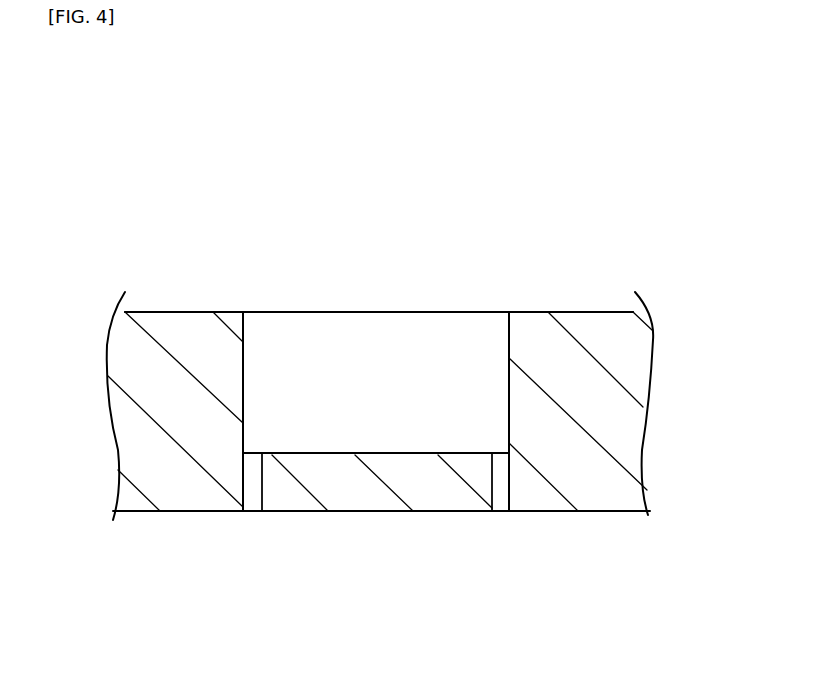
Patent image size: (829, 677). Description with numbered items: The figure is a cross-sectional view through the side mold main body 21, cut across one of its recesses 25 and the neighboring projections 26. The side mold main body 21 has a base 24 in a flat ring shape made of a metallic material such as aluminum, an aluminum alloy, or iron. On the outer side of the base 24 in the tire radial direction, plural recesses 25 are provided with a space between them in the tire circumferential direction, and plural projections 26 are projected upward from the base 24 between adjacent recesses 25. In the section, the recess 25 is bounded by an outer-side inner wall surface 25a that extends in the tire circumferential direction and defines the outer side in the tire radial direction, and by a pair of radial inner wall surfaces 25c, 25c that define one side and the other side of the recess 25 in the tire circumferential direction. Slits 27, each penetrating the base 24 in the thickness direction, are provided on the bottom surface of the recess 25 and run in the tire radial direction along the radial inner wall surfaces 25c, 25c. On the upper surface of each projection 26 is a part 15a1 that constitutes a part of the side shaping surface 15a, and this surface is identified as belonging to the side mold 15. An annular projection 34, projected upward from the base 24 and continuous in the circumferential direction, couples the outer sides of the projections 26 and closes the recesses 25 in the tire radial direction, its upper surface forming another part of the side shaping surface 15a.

The side mold main body 21 is at (395, 135).
The annular projection 34 is at (308, 312).
The part of the side shaping surface 15a1 is at (595, 248).
The side shaping surface 15a is at (188, 312).
The die 15 is at (553, 312).
The projection 26 is at (147, 372).
The outer-side inner wall surface 25a is at (410, 360).
The radial inner wall surface 25c is at (248, 388).
The recess 25 is at (393, 452).
The slit 27 is at (257, 487).
The base 24 is at (344, 480).